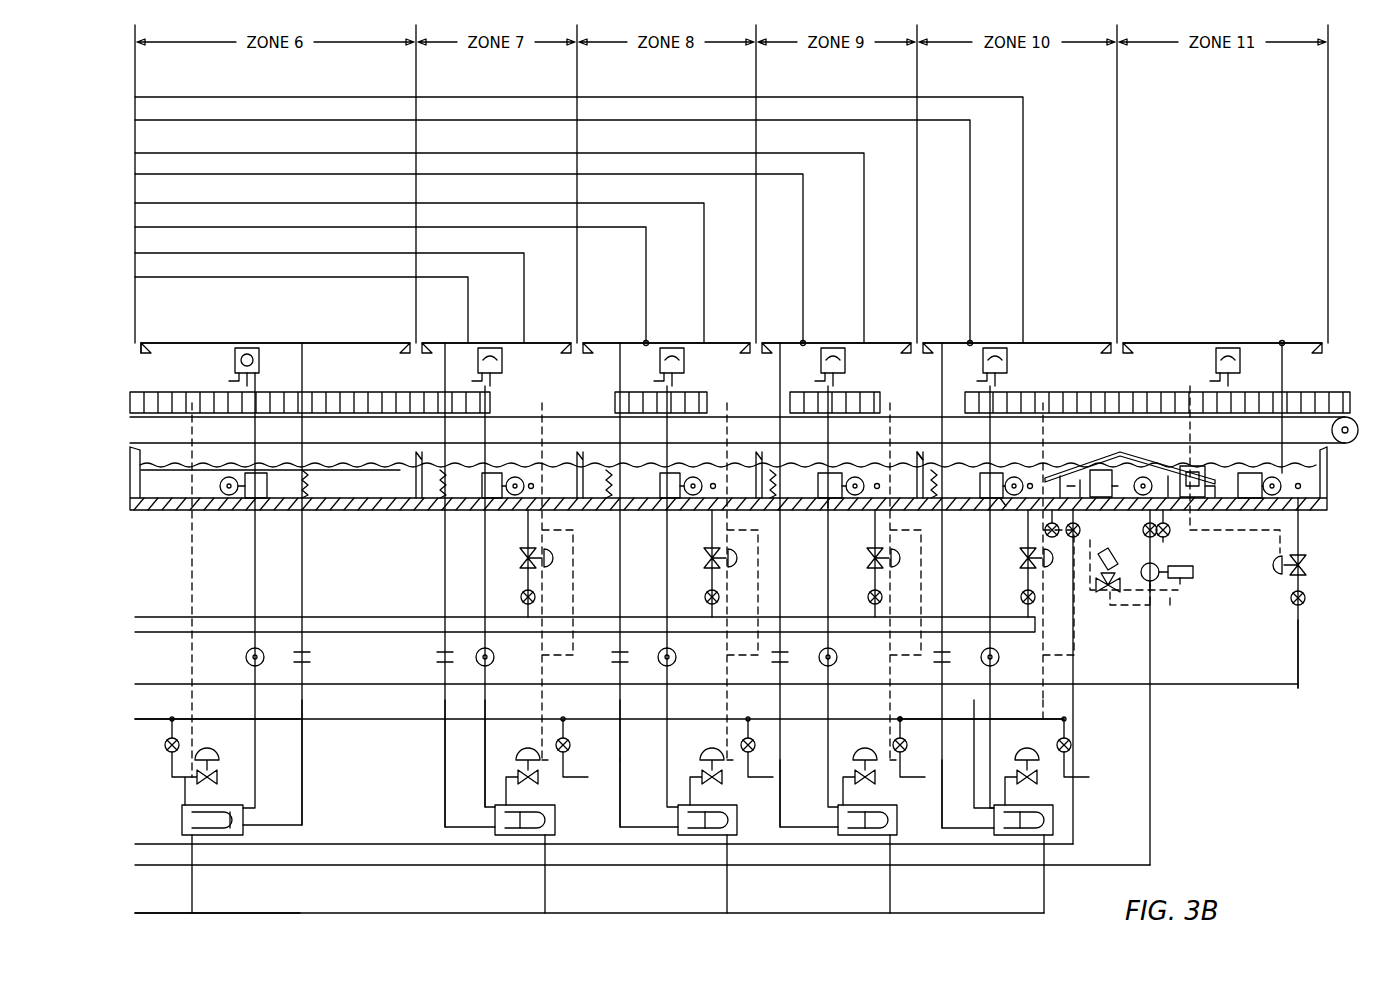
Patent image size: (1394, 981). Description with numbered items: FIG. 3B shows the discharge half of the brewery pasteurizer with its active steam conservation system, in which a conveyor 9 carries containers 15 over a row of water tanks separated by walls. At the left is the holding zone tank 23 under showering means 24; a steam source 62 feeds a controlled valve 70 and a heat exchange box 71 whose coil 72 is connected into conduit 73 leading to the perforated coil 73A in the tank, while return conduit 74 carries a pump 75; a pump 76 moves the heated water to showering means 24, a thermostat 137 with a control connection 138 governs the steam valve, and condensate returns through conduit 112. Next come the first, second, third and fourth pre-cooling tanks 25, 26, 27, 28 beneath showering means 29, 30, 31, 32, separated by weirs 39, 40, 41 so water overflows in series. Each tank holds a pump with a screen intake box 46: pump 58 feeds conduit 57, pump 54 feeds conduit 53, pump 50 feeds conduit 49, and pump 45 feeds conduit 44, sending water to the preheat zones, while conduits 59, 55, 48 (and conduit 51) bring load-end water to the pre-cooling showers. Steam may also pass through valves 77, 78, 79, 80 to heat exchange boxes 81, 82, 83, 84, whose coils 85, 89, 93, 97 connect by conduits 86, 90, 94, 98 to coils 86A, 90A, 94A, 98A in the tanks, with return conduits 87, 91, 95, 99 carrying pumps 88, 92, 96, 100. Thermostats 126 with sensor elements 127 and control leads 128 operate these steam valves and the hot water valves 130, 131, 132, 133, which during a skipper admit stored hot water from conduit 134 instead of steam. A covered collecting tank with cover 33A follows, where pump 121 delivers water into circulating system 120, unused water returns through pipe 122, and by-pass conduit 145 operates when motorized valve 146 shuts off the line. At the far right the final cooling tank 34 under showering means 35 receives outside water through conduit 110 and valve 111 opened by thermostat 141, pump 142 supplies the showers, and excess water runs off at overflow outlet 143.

The conveyor 9 is at (1334, 406).
The containers 15 is at (134, 375).
The tank 23 is at (366, 508).
The showering means 24 is at (320, 343).
The first pre-cooling tank 25 is at (426, 508).
The second pre-cooling tank 26 is at (576, 518).
The third pre-cooling tank 27 is at (776, 518).
The fourth pre-cooling tank 28 is at (901, 518).
The showering means 29 is at (554, 340).
The showering means 30 is at (638, 338).
The showering means 31 is at (846, 340).
The showering means 32 is at (1040, 342).
The cover 33A is at (1078, 468).
The final cooling water collecting tank 34 is at (1324, 468).
The showering means 35 is at (1240, 342).
The weir 39 is at (598, 462).
The weir 40 is at (766, 464).
The weir 41 is at (903, 450).
The conduit 44 is at (1023, 100).
The pump 45 is at (992, 498).
The screen intake box 46 is at (275, 472).
The conduit 48 is at (970, 163).
The conduit 49 is at (864, 153).
The pump 50 is at (830, 518).
The control line 51 is at (803, 200).
The conduit 53 is at (704, 203).
The pump 54 is at (722, 470).
The conduit 55 is at (646, 232).
The conduit 57 is at (500, 253).
The pump 58 is at (540, 462).
The conduit 59 is at (358, 278).
The steam source 62 is at (154, 720).
The controlled valve 70 is at (198, 774).
The heat exchange box 71 is at (200, 836).
The coil 72 is at (230, 838).
The conduit 73 is at (302, 778).
The coil 73A is at (328, 482).
The return conduit 74 is at (302, 726).
The pump 75 is at (244, 660).
The pump 76 is at (219, 510).
The valve 77 is at (520, 762).
The valve 78 is at (700, 766).
The valve 79 is at (854, 762).
The valve 80 is at (1014, 762).
The heat exchange box 81 is at (554, 836).
The heat exchange box 82 is at (738, 834).
The heat exchange box 83 is at (898, 835).
The heat exchange box 84 is at (1053, 818).
The coil 85 is at (522, 834).
The conduit 86 is at (436, 780).
The coil 86A is at (488, 467).
The return conduit 87 is at (446, 742).
The pump 88 is at (495, 658).
The coil 89 is at (712, 834).
The conduit 90 is at (620, 788).
The coil 90A is at (608, 474).
The return conduit 91 is at (670, 714).
The pump 92 is at (678, 658).
The coil 93 is at (868, 834).
The conduit 94 is at (782, 780).
The coil 94A is at (798, 470).
The return conduit 95 is at (826, 584).
The pump 96 is at (838, 658).
The coil 97 is at (1024, 828).
The conduit 98 is at (940, 798).
The coil 98A is at (960, 436).
The return conduit 99 is at (974, 766).
The pump 100 is at (997, 658).
The conduit 110 is at (1302, 626).
The valve 111 is at (1312, 562).
The conduit 112 is at (184, 914).
The water circulating system 120 is at (1150, 788).
The pump 121 is at (1150, 470).
The pipe 122 is at (1078, 788).
The thermostat 126 is at (478, 370).
The sensor element 127 is at (476, 430).
The control lead 128 is at (542, 678).
The hot water valve 130 is at (519, 562).
The hot water valve 131 is at (704, 562).
The hot water valve 132 is at (864, 562).
The hot water valve 133 is at (1017, 562).
The conduit 134 is at (369, 616).
The thermostat 137 is at (249, 344).
The control connection 138 is at (192, 588).
The thermostat 141 is at (1216, 374).
The pump 142 is at (1286, 508).
The overflow outlet 143 is at (1200, 466).
The by-pass conduit 145 is at (1168, 528).
The motorized valve 146 is at (1152, 582).